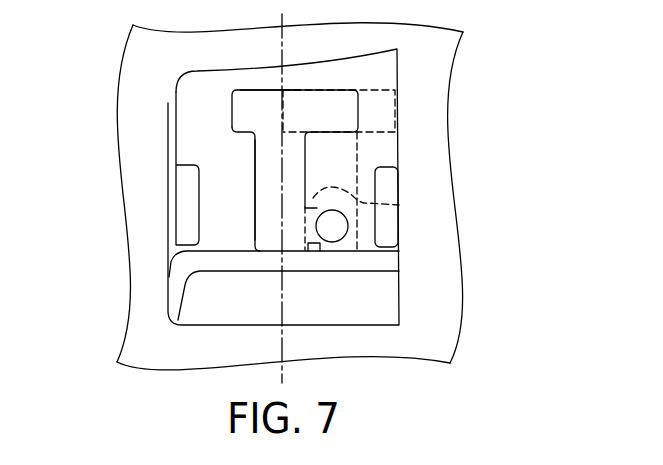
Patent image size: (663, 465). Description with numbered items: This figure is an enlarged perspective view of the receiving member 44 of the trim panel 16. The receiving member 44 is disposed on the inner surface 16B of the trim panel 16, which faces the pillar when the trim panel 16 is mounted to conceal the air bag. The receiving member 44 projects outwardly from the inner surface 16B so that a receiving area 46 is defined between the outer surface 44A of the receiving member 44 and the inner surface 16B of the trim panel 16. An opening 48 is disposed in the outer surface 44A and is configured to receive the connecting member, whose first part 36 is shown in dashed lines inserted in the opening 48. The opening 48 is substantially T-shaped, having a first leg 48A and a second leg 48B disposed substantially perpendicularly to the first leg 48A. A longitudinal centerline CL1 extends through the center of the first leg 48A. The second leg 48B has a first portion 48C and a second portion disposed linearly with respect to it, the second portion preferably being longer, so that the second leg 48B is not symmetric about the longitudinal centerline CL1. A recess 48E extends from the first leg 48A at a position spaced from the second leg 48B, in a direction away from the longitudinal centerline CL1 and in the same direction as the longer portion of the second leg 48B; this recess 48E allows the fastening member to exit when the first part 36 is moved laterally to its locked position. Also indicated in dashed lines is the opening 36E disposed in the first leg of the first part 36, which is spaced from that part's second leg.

The trim panel 16 is at (466, 307).
The inner surface 16B is at (147, 60).
The first part 36 is at (371, 86).
The opening 36E is at (399, 205).
The receiving member 44 is at (215, 68).
The outer surface 44A is at (190, 150).
The receiving area 46 is at (267, 233).
The opening 48 is at (253, 205).
The first leg 48A is at (255, 160).
The second leg 48B is at (248, 90).
The first portion 48C is at (232, 110).
The recess 48E is at (318, 249).
The longitudinal centerline CL1 is at (282, 347).